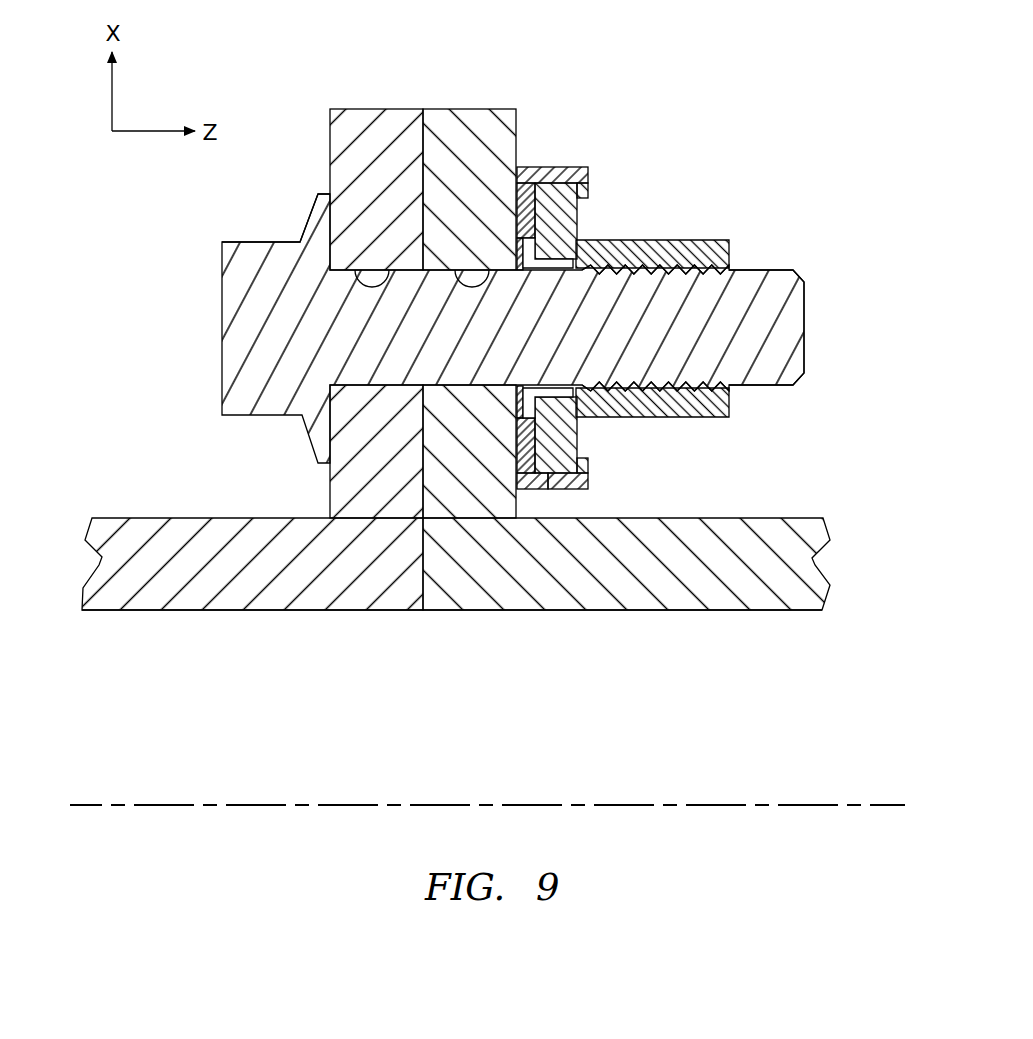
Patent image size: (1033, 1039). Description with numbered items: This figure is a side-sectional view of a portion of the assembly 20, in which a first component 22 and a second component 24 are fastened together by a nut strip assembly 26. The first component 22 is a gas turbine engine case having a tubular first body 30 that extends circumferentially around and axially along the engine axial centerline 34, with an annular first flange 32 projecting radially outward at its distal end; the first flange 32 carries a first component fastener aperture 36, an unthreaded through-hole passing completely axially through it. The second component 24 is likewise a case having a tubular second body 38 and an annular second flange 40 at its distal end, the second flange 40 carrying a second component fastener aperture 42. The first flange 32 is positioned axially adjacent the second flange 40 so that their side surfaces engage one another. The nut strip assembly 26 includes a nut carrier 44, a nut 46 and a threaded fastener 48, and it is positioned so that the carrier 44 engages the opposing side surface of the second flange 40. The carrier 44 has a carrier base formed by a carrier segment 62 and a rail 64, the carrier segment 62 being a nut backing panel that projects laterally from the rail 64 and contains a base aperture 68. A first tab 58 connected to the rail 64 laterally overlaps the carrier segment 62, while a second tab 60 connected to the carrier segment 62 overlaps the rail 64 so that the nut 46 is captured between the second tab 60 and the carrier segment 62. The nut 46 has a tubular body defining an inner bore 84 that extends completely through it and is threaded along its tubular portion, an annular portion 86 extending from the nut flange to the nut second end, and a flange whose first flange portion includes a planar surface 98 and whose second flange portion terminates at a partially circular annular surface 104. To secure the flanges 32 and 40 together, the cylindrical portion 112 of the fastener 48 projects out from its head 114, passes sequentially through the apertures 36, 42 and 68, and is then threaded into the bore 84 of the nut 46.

The assembly 20 is at (689, 105).
The first component 22 is at (77, 556).
The second component 24 is at (851, 556).
The nut strip assembly 26 is at (706, 199).
The first body 30 is at (180, 612).
The first flange 32 is at (388, 108).
The axial centerline 34 is at (886, 800).
The first component fastener aperture 36 is at (388, 268).
The second body 38 is at (740, 612).
The second flange 40 is at (480, 108).
The second component fastener aperture 42 is at (490, 268).
The nut carrier 44 is at (568, 162).
The nut 46 is at (718, 239).
The threaded fastener 48 is at (212, 333).
The first tab 58 is at (593, 474).
The second tab 60 is at (592, 188).
The carrier segment 62 is at (525, 215).
The rail 64 is at (567, 492).
The base aperture 68 is at (512, 395).
The inner bore 84 is at (672, 275).
The annular portion 86 is at (535, 256).
The planar surface 98 is at (549, 476).
The annular surface 104 is at (538, 452).
The cylindrical portion 112 is at (775, 388).
The head 114 is at (258, 238).